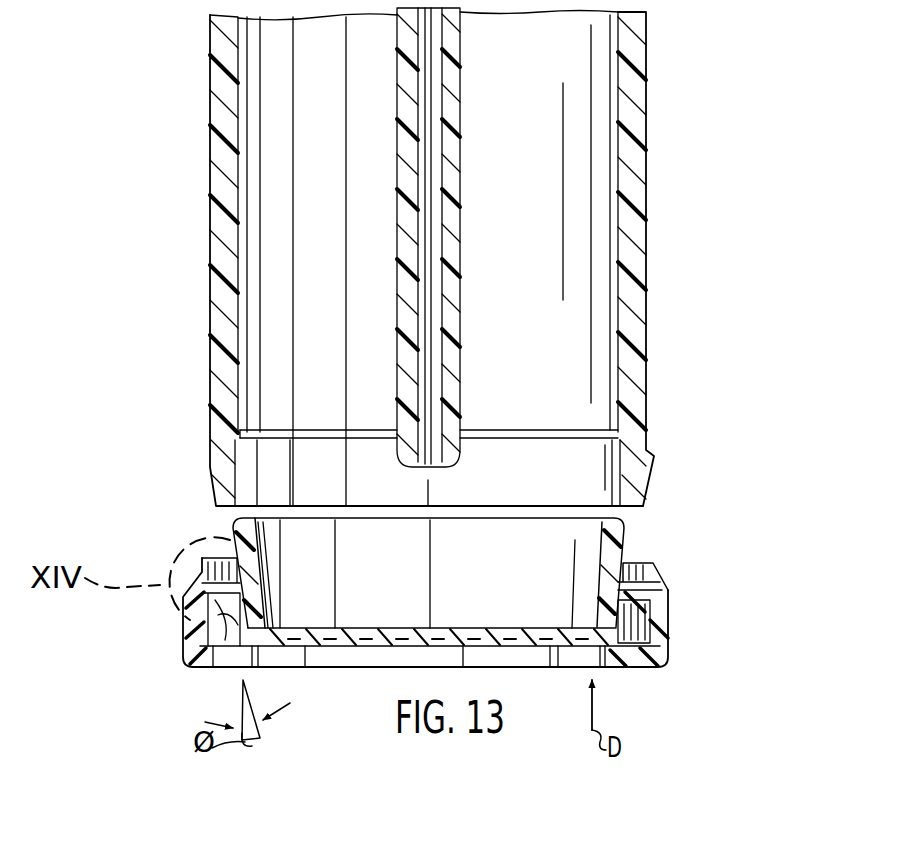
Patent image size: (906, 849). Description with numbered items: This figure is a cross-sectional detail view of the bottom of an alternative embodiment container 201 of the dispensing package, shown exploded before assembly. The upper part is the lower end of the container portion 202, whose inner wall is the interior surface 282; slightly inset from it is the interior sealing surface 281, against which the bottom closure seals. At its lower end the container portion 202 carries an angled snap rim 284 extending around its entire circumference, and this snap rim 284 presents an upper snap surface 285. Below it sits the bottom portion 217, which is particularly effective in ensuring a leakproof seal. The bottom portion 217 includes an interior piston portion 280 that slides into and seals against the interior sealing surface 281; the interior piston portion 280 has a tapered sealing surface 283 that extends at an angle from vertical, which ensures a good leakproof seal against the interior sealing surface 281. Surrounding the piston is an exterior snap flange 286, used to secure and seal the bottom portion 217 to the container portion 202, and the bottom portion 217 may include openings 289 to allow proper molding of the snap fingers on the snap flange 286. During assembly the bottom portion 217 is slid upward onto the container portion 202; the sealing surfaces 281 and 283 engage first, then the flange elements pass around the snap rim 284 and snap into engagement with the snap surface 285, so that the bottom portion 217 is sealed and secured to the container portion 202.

The container 201 is at (142, 176).
The container portion 202 is at (650, 178).
The bottom portion 217 is at (683, 620).
The interior piston portion 280 is at (625, 535).
The interior sealing surface 281 is at (610, 472).
The interior surface 282 is at (610, 305).
The tapered sealing surface 283 is at (228, 535).
The angled snap rim 284 is at (203, 467).
The upper snap surface 285 is at (203, 455).
The exterior snap flange 286 is at (183, 625).
The openings 289 is at (205, 668).